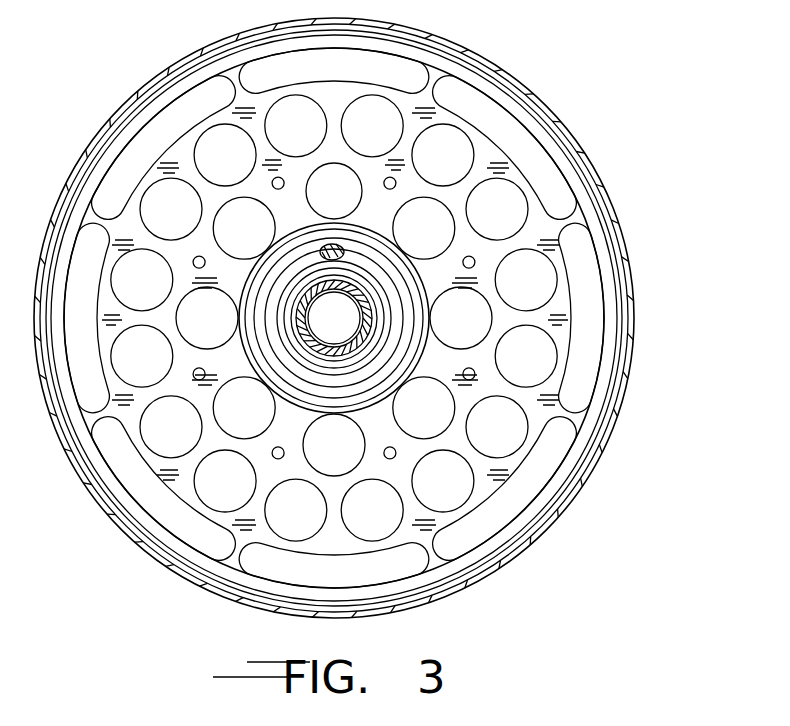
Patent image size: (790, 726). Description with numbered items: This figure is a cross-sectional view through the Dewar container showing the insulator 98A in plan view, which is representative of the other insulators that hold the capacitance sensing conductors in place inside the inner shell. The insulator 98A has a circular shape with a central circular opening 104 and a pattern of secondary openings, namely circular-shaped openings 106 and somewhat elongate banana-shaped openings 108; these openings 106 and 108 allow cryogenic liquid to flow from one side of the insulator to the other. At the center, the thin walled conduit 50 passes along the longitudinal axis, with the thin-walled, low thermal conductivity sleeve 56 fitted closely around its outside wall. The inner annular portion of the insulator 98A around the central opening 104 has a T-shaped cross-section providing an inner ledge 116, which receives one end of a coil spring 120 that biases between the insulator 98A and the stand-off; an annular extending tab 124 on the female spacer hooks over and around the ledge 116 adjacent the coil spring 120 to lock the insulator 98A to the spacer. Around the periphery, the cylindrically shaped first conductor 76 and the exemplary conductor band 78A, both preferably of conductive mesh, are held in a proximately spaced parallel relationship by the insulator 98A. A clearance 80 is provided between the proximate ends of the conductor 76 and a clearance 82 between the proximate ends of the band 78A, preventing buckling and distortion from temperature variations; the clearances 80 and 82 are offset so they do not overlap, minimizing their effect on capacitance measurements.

The conduit 50 is at (353, 348).
The sleeve 56 is at (294, 321).
The first conductor 76 is at (573, 497).
The conductor band 78A is at (602, 403).
The clearance 80 is at (400, 600).
The clearance 82 is at (593, 463).
The insulator 98A is at (430, 315).
The central circular opening 104 is at (353, 278).
The circular openings 106 is at (462, 146).
The banana-shaped openings 108 is at (553, 178).
The inner ledge 116 is at (337, 243).
The coil spring 120 is at (282, 272).
The tab 124 is at (288, 352).